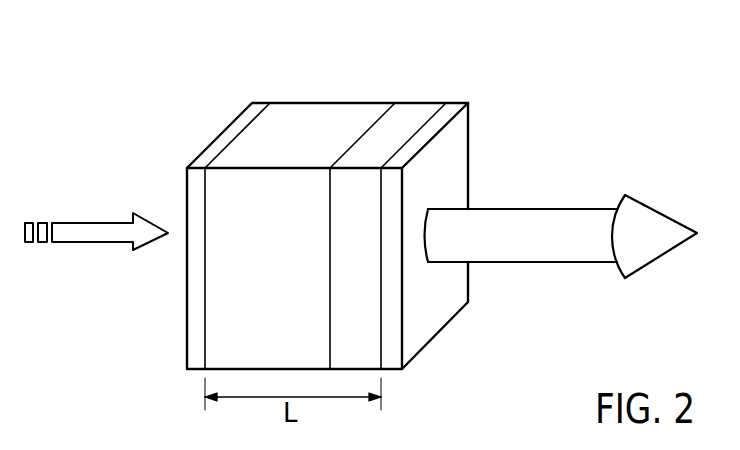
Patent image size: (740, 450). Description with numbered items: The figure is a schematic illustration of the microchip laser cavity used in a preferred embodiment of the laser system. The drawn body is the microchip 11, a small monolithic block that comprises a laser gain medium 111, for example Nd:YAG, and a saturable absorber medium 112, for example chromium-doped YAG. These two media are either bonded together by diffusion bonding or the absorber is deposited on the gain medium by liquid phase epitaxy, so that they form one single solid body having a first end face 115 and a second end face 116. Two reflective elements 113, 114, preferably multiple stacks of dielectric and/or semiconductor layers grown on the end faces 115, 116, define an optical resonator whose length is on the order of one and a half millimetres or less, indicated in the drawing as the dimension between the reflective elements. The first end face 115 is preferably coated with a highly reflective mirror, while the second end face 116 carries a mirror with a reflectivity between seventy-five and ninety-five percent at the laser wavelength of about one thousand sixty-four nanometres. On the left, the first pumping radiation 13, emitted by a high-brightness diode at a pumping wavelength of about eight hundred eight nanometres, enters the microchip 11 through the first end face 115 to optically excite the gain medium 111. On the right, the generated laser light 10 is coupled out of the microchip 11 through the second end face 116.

The laser light 10 is at (547, 248).
The microchip 11 is at (460, 327).
The first pumping radiation 13 is at (70, 232).
The laser gain medium 111 is at (323, 120).
The saturable absorber medium 112 is at (415, 118).
The first reflective element 113 is at (255, 113).
The second reflective element 114 is at (448, 112).
The first end face 115 is at (205, 210).
The second end face 116 is at (382, 210).